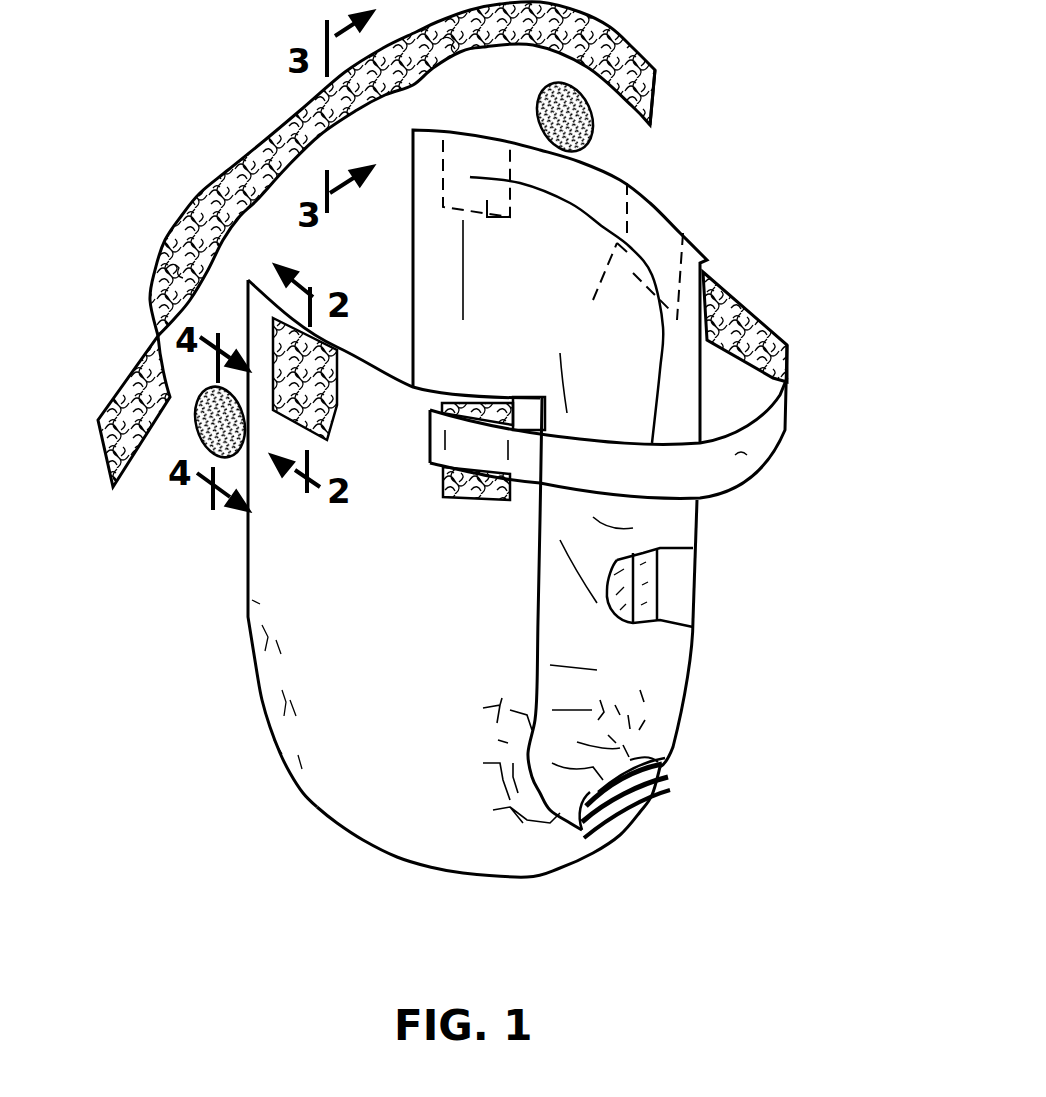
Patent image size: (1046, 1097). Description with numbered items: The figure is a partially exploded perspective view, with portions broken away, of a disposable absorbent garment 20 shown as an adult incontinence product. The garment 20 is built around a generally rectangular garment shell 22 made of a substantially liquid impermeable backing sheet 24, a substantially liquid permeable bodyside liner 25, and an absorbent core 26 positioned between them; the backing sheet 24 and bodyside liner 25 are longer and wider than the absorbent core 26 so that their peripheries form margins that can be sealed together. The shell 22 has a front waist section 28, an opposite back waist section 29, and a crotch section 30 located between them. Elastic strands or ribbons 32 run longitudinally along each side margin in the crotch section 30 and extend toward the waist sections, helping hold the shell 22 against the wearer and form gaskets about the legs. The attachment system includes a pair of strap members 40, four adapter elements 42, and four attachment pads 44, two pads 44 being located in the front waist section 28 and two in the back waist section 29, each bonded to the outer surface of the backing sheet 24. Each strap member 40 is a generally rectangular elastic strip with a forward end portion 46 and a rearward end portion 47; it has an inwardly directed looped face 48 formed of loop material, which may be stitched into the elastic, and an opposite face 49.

The disposable absorbent garment 20 is at (238, 826).
The garment shell 22 is at (231, 613).
The backing sheet 24 is at (680, 598).
The bodyside liner 25 is at (690, 626).
The absorbent core 26 is at (660, 572).
The front waist section 28 is at (425, 375).
The back waist section 29 is at (643, 184).
The crotch section 30 is at (427, 835).
The elastic strands or ribbons 32 is at (648, 795).
The strap member 40 is at (222, 192).
The adapter element 42 is at (600, 149).
The attachment pad 44 is at (487, 222).
The forward end portion 46 is at (130, 365).
The rearward end portion 47 is at (650, 42).
The looped face 48 is at (449, 52).
The opposite face 49 is at (170, 263).